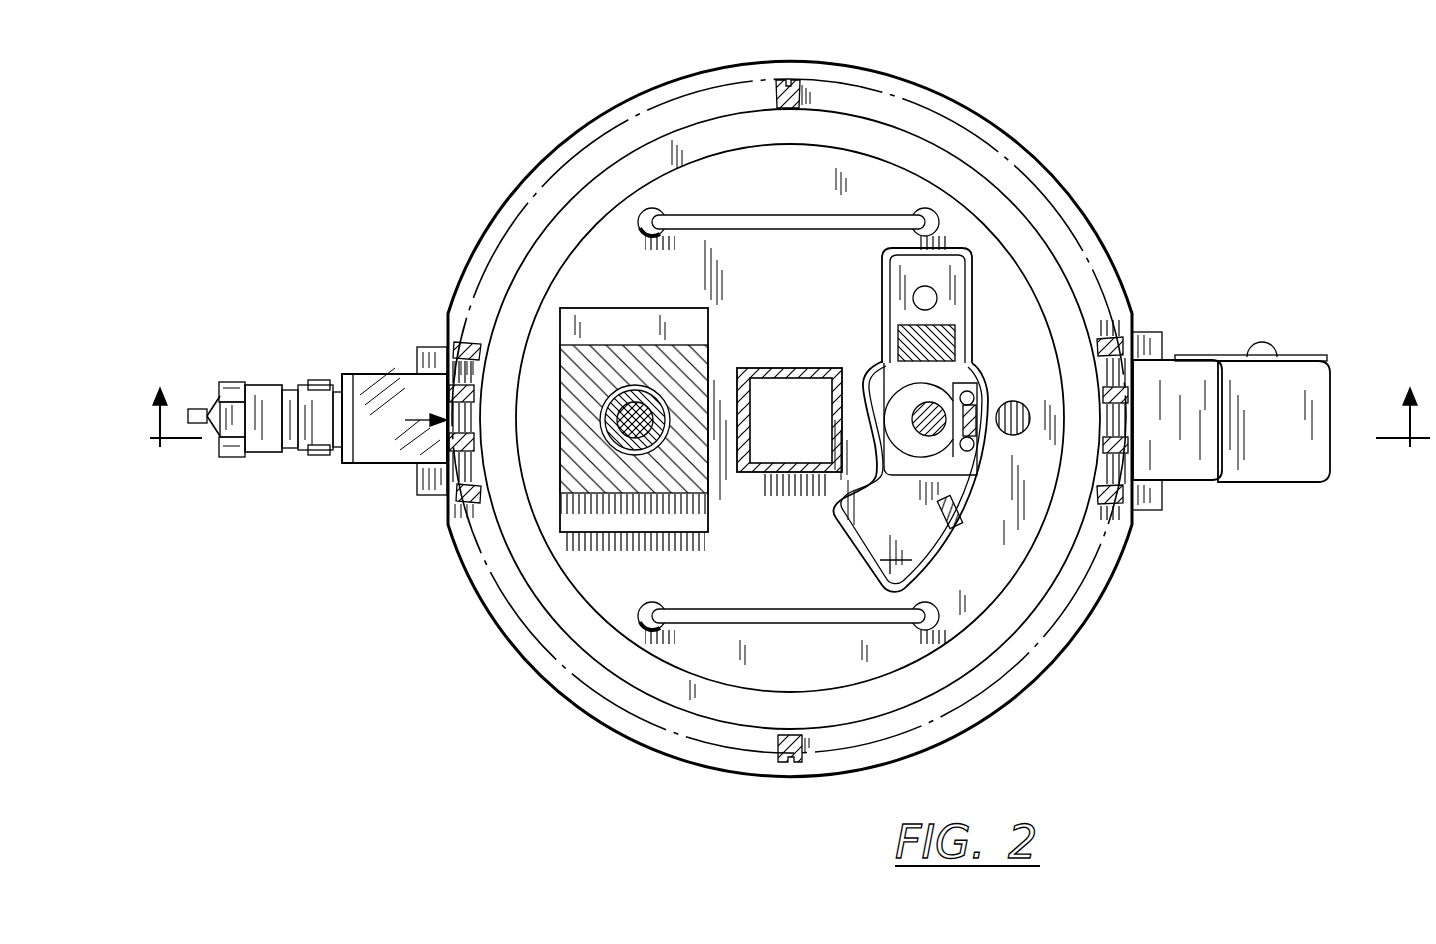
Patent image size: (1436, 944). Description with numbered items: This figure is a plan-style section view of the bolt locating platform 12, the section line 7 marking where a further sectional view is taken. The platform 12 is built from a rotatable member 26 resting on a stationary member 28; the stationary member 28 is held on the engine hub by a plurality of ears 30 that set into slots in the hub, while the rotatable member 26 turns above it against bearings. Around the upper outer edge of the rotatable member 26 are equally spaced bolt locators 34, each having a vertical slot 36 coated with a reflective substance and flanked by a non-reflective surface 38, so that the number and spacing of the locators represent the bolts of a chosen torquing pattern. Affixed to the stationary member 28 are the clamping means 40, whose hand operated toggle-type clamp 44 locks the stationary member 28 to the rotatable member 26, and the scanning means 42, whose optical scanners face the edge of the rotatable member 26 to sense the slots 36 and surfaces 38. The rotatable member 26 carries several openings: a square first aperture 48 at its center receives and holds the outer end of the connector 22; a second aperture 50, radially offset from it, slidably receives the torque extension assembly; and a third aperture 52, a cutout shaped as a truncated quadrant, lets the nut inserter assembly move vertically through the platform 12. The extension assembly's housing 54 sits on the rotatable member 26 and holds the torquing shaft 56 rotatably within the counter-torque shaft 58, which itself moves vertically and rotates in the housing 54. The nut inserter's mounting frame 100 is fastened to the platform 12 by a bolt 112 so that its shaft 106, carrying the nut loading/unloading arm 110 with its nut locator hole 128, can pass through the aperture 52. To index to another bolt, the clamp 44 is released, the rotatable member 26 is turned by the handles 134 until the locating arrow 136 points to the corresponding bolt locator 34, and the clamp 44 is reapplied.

The bolt locating platform 12 is at (1020, 135).
The connector 22 is at (775, 474).
The rotatable member 26 is at (803, 301).
The stationary member 28 is at (471, 590).
The ears 30 is at (943, 508).
The bolt locators 34 is at (465, 343).
The vertical slot 36 is at (1140, 343).
The non-reflective surface 38 is at (1130, 340).
The clamping means 40 is at (414, 366).
The scanning means 42 is at (1290, 428).
The toggle-type clamp 44 is at (282, 452).
The first aperture 48 is at (822, 372).
The second aperture 50 is at (658, 402).
The third aperture 52 is at (866, 533).
The housing 54 is at (548, 488).
The torquing shaft 56 is at (606, 416).
The counter-torque shaft 58 is at (614, 426).
The mounting frame 100 is at (972, 262).
The shaft 106 is at (930, 402).
The nut loading/unloading arm 110 is at (938, 456).
The bolt 112 is at (937, 297).
The nut locator hole 128 is at (1032, 386).
The handles 134 is at (787, 212).
The locating arrow 136 is at (407, 425).
The section line 7 is at (790, 400).